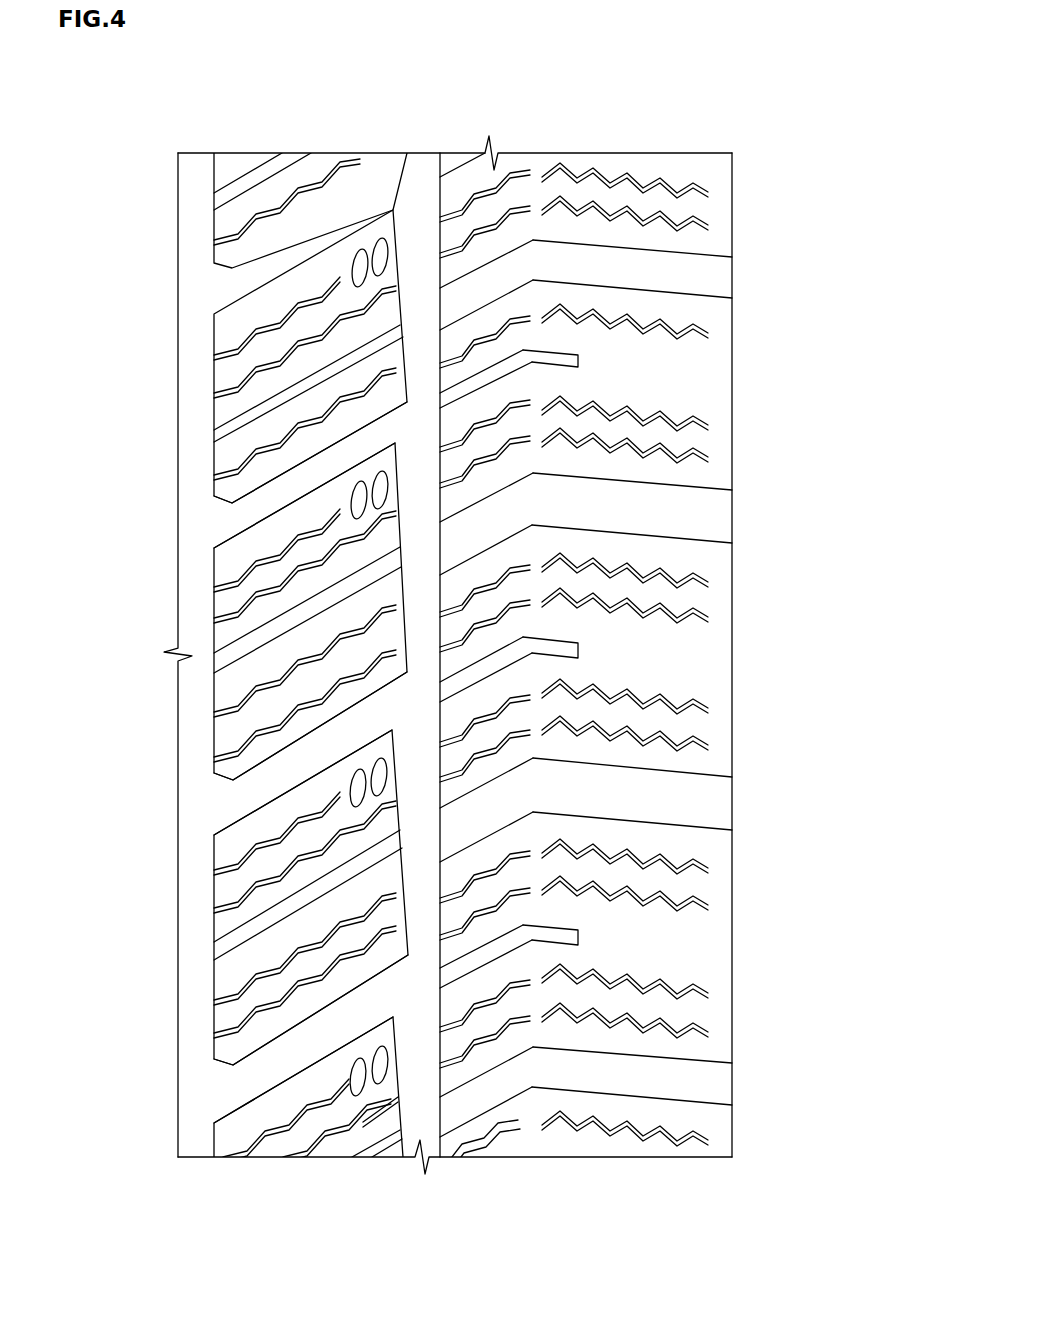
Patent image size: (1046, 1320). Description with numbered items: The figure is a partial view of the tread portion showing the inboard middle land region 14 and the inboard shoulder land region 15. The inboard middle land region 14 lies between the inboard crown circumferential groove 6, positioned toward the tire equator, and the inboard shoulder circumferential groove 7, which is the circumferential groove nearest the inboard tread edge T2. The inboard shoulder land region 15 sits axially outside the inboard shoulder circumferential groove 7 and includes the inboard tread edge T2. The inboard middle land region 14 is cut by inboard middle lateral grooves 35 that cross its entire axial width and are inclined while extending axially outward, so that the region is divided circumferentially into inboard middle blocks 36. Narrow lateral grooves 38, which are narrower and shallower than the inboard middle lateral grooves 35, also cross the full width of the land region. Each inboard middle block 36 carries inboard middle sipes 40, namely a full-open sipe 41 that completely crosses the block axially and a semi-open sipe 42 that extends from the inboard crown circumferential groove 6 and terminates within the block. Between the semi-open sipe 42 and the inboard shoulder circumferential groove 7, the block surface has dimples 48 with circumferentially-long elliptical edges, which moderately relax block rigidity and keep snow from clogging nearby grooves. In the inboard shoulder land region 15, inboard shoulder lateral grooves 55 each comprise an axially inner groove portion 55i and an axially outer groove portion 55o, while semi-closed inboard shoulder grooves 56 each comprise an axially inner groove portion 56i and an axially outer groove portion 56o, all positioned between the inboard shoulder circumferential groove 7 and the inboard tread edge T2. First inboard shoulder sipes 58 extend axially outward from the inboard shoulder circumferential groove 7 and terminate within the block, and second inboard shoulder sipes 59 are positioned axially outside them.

The inboard crown circumferential groove 6 is at (198, 190).
The inboard shoulder circumferential groove 7 is at (418, 210).
The inboard middle land region 14 is at (298, 184).
The inboard shoulder land region 15 is at (589, 195).
The inboard tread edge T2 is at (733, 204).
The inboard middle lateral groove 35 is at (295, 488).
The inboard middle block 36 is at (300, 363).
The narrow lateral groove 38 is at (298, 615).
The inboard middle sipe 40 is at (224, 327).
The full-open sipe 41 is at (283, 348).
The semi-open sipe 42 is at (283, 315).
The dimple 48 is at (362, 250).
The inboard shoulder lateral groove 55 is at (657, 677).
The axially inner groove portion 55i is at (490, 518).
The axially outer groove portion 55o is at (650, 504).
The semi-closed inboard shoulder groove 56 is at (657, 669).
The axially inner groove portion 56i is at (490, 664).
The axially outer groove portion 56o is at (565, 645).
The first inboard shoulder sipe 58 is at (540, 708).
The second inboard shoulder sipe 59 is at (667, 745).